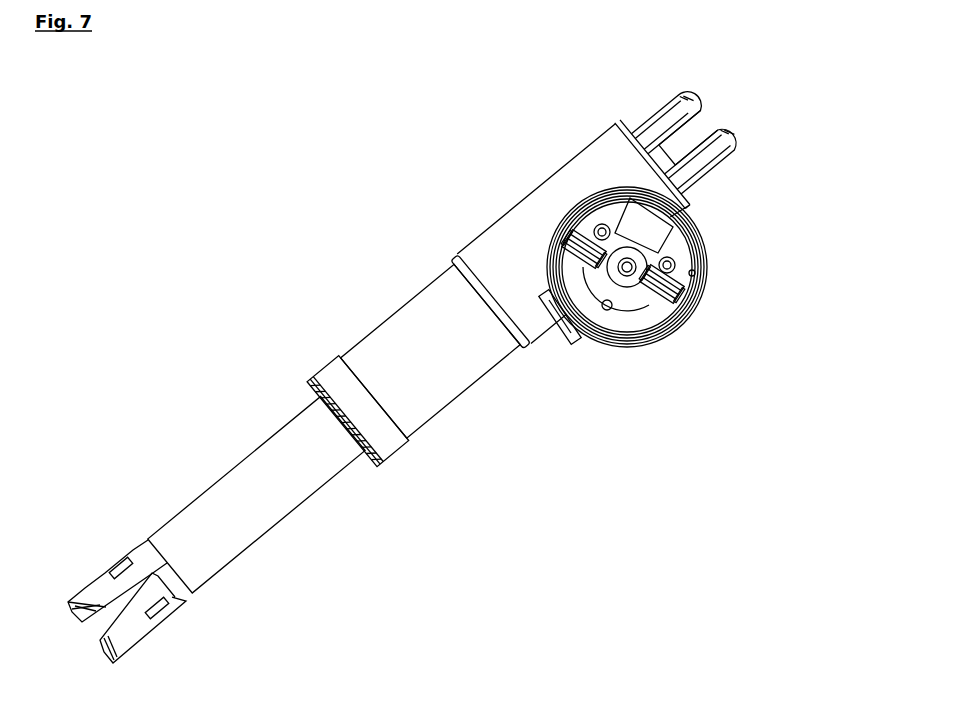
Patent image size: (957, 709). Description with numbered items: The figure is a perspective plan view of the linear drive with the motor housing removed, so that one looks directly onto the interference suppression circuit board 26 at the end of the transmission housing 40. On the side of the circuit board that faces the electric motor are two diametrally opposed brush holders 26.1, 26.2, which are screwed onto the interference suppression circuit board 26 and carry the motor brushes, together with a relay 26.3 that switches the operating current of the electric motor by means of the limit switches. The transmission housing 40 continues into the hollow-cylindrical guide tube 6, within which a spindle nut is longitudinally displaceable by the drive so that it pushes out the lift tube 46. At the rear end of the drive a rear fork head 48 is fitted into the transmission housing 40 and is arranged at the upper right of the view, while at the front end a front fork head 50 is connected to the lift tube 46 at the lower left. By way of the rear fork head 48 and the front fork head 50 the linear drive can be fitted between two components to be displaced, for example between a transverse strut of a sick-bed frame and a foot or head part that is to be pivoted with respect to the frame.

The guide tube 6 is at (402, 347).
The interference suppression circuit board 26 is at (658, 307).
The brush holder 26.1 is at (677, 280).
The brush holder 26.2 is at (587, 247).
The relay 26.3 is at (653, 222).
The transmission housing 40 is at (513, 198).
The lift tube 46 is at (252, 478).
The rear fork head 48 is at (718, 138).
The front fork head 50 is at (97, 592).